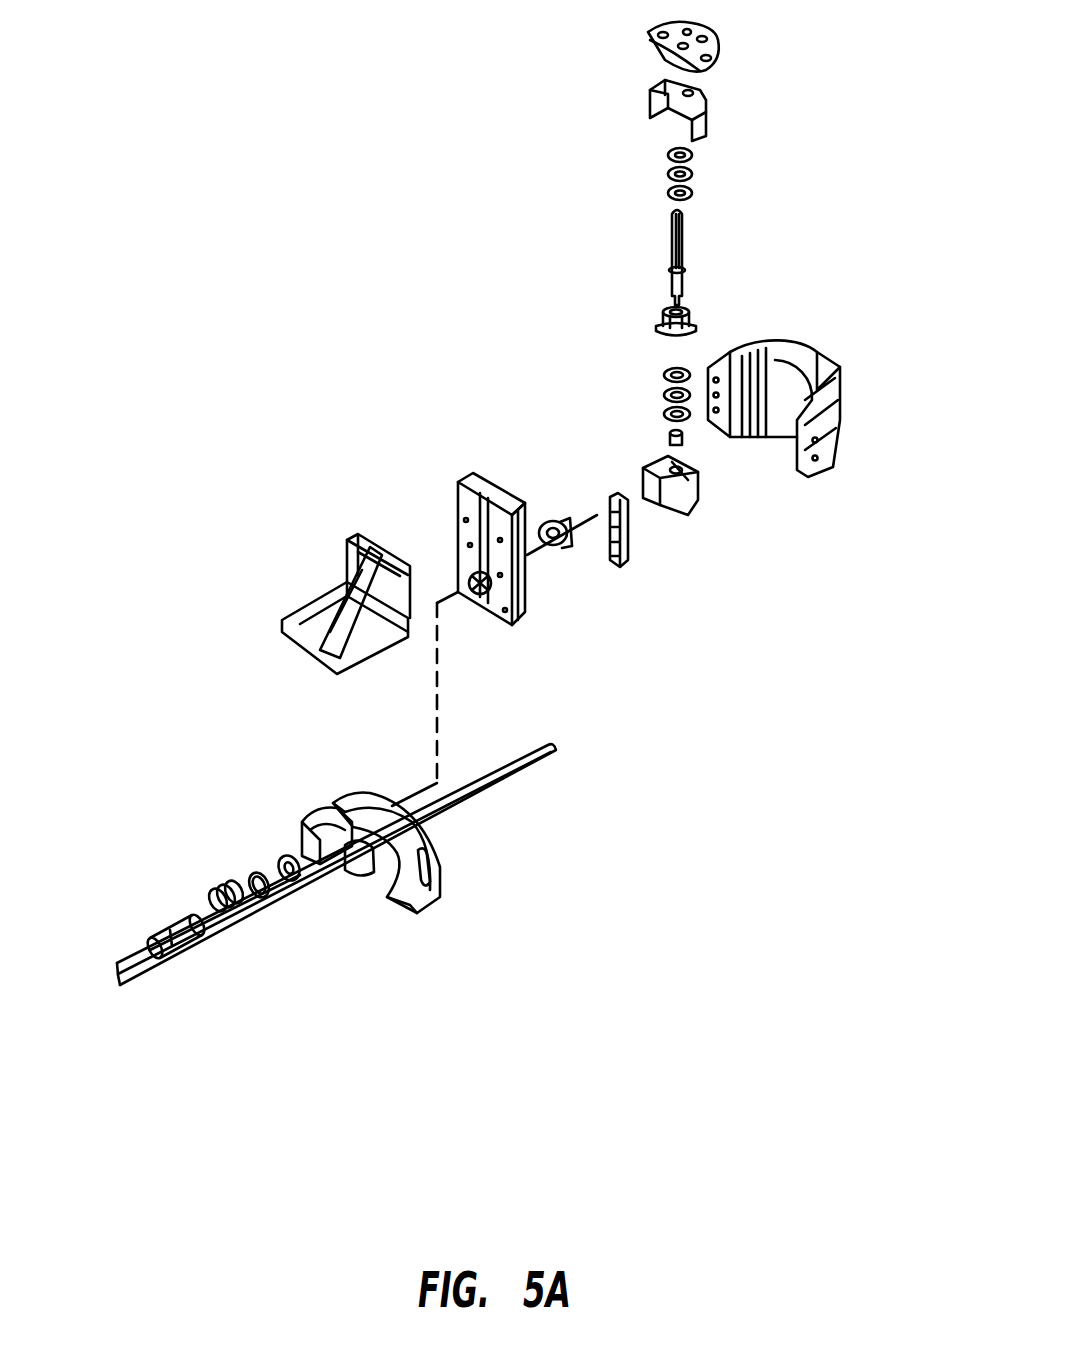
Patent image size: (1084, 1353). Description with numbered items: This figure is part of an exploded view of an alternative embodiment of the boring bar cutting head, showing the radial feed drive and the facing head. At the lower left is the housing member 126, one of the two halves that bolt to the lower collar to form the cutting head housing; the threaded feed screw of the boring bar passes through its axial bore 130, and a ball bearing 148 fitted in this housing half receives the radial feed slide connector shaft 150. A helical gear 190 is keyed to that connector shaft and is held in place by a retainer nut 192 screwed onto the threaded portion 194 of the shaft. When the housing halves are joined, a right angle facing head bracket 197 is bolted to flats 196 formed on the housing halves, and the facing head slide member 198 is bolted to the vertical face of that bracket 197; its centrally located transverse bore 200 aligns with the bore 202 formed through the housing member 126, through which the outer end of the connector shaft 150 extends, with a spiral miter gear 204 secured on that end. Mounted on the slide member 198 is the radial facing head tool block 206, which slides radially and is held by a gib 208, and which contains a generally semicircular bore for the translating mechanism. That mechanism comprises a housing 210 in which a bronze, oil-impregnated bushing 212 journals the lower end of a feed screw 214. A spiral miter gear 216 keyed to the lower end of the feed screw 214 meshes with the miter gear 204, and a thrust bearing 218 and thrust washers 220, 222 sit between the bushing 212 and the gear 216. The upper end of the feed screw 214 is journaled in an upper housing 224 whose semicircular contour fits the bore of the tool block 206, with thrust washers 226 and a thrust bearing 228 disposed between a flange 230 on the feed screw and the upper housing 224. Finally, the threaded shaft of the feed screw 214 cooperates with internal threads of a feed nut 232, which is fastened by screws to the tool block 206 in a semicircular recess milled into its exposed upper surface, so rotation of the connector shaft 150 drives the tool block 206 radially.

The housing member 126 is at (352, 795).
The axial bore 130 is at (368, 863).
The ball bearing 148 is at (290, 853).
The radial feed slide connector shaft 150 is at (172, 917).
The helical gear 190 is at (217, 883).
The retainer nut 192 is at (250, 872).
The threaded portion 194 is at (210, 938).
The flats 196 is at (376, 797).
The angle bracket 197 is at (342, 587).
The facing head slide member 198 is at (456, 487).
The transverse bore 200 is at (478, 590).
The bore 202 is at (322, 812).
The spiral miter gear 204 is at (550, 517).
The radial facing head tool block 206 is at (833, 352).
The gib 208 is at (781, 370).
The housing 210 is at (653, 458).
The bronze oil-impregnated bushing 212 is at (668, 433).
The feed screw 214 is at (680, 270).
The spiral miter gear 216 is at (667, 310).
The thrust bearing 218 is at (665, 397).
The thrust washer 220 is at (665, 413).
The thrust washer 222 is at (690, 368).
The upper housing 224 is at (708, 112).
The thrust washers 226 is at (698, 193).
The thrust bearing 228 is at (666, 180).
The flange 230 is at (684, 32).
The feed nut 232 is at (717, 38).